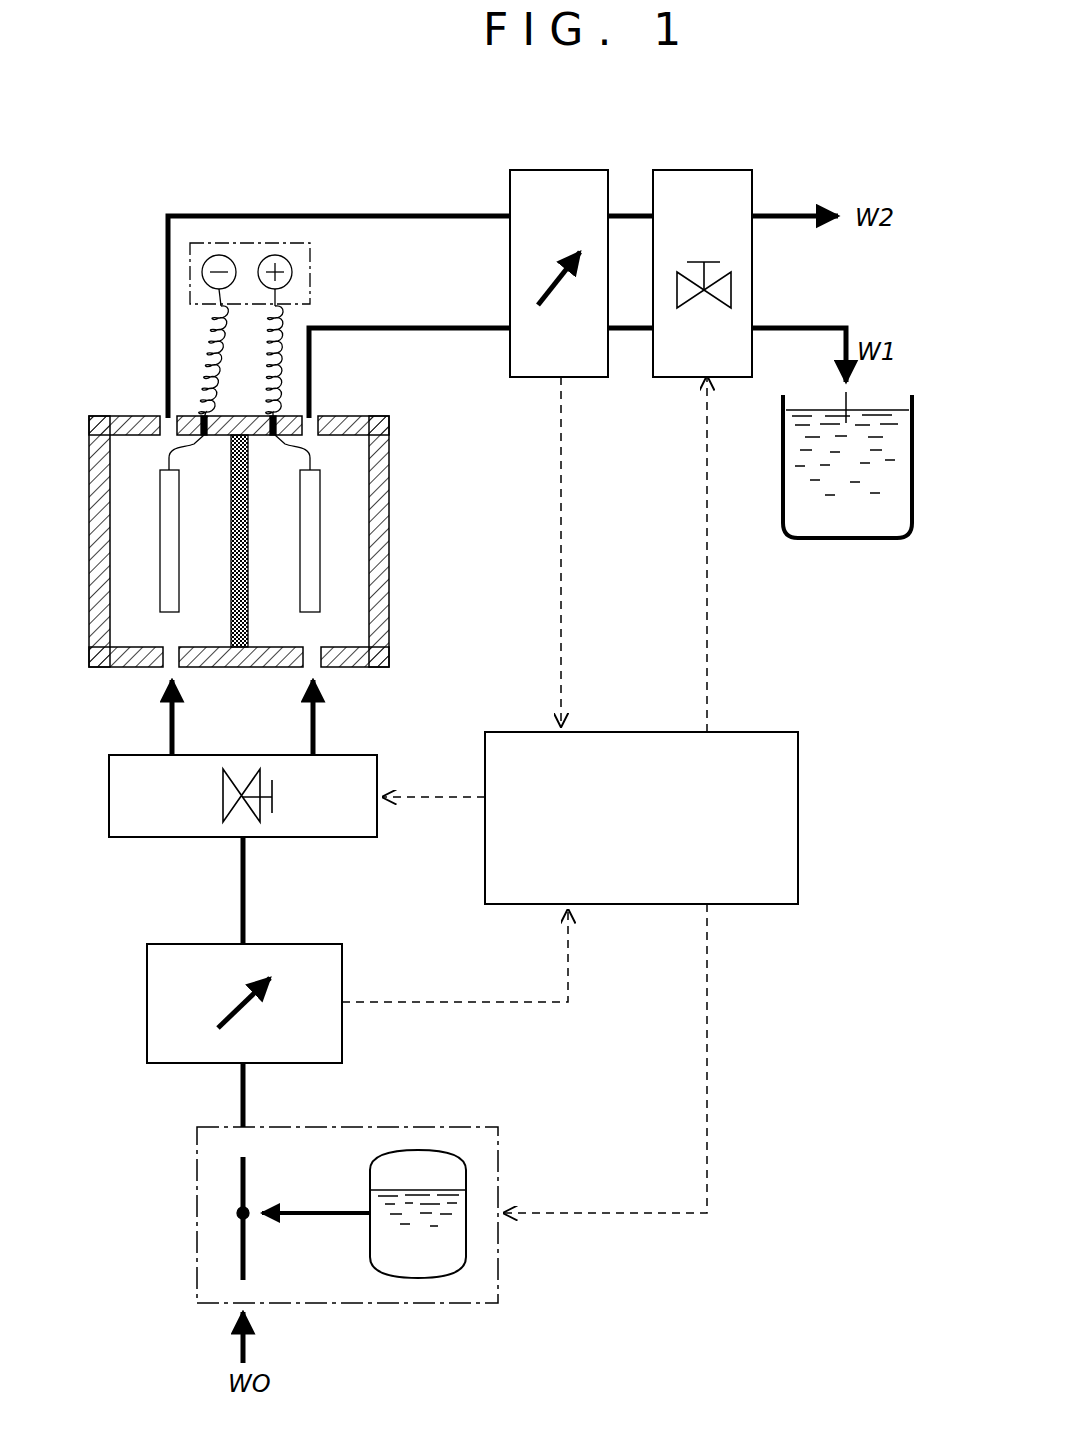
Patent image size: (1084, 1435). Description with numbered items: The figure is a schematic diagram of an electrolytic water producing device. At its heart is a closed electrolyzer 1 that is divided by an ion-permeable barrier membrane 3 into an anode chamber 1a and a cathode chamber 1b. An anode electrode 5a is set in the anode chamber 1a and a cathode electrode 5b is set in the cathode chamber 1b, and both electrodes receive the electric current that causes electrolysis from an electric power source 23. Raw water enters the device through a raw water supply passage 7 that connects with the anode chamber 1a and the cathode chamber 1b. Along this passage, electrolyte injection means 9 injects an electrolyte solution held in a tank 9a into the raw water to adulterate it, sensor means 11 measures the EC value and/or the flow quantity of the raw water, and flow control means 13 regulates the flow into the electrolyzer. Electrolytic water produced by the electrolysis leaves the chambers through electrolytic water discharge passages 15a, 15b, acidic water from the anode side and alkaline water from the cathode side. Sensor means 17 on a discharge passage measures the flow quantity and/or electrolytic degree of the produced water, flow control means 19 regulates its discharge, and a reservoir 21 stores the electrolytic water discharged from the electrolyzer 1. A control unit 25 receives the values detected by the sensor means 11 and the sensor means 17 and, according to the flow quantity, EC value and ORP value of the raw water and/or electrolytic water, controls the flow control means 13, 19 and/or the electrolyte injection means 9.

The closed electrolyzer 1 is at (386, 478).
The anode chamber 1a is at (355, 598).
The cathode chamber 1b is at (131, 446).
The ion-permeable barrier membrane 3 is at (236, 620).
The anode electrode 5a is at (312, 538).
The cathode electrode 5b is at (168, 590).
The raw water supply passage 7 is at (238, 883).
The electrolyte injection means 9 is at (463, 1127).
The tank 9a is at (405, 1162).
The sensor means 11 is at (333, 972).
The flow control means 13 is at (340, 830).
The electrolytic water discharge passage 15a is at (435, 331).
The electrolytic water discharge passage 15b is at (404, 212).
The sensor means 17 is at (553, 168).
The flow control means 19 is at (702, 168).
The reservoir 21 is at (851, 528).
The electric power source 23 is at (313, 283).
The control unit 25 is at (785, 837).